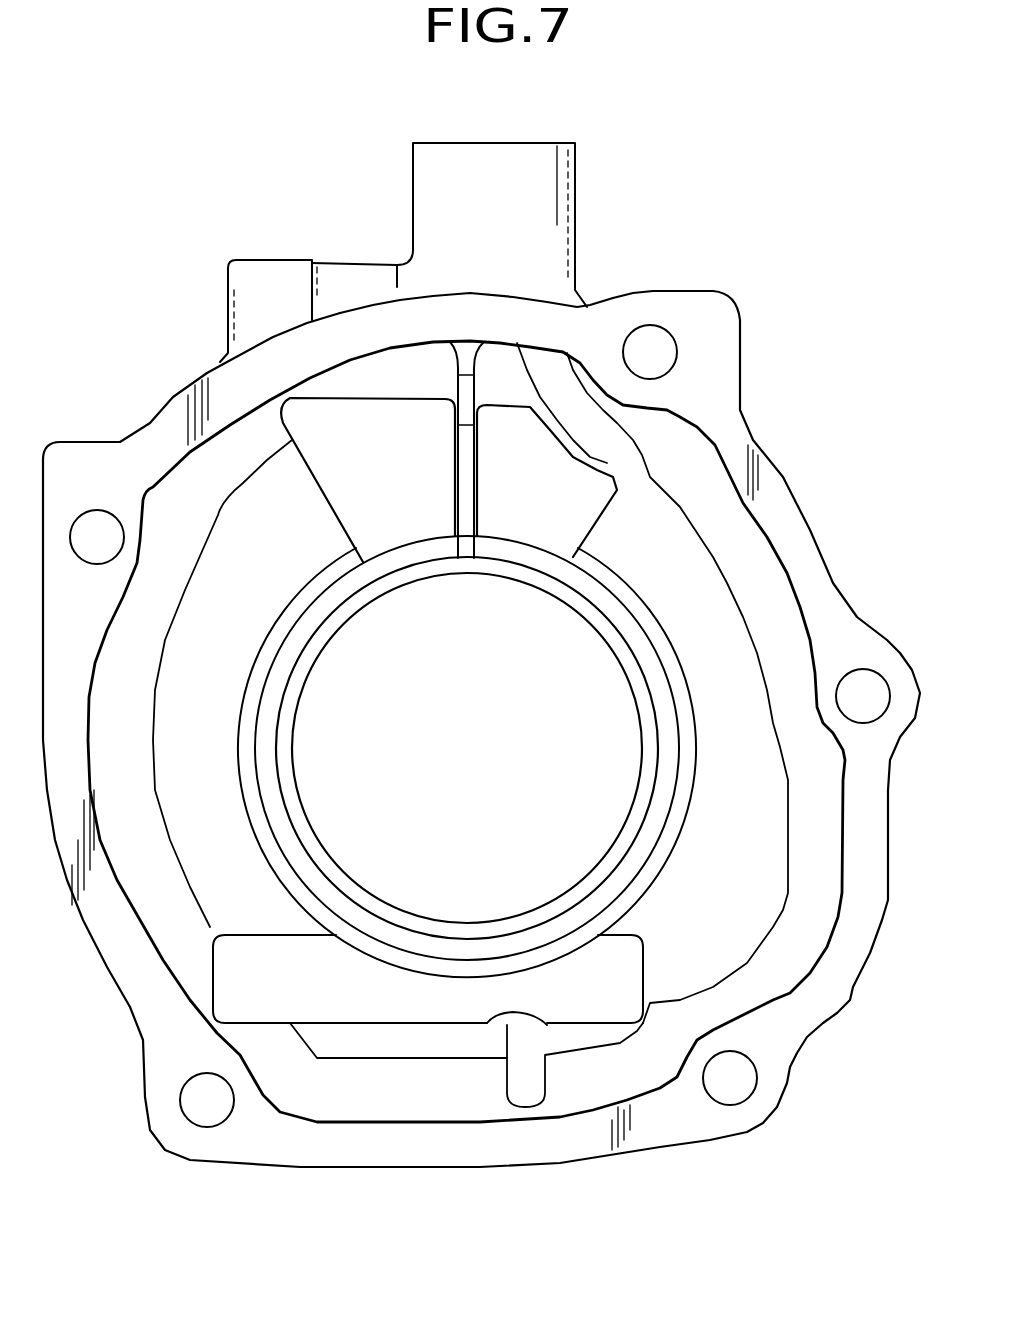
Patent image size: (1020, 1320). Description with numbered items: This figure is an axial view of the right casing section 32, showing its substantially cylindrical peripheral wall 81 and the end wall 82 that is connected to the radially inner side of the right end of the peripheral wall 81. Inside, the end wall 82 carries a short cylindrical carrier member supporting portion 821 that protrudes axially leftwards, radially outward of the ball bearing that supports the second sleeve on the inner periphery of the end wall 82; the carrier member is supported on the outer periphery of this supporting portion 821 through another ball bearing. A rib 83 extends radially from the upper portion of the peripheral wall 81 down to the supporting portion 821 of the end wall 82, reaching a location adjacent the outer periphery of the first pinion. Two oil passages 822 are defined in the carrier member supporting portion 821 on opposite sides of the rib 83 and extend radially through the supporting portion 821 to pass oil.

The peripheral wall 81 is at (153, 433).
The right casing section 32 is at (800, 467).
The end wall 82 is at (710, 700).
The carrier member supporting portion 821 is at (287, 833).
The oil passages 822 is at (323, 490).
The rib 83 is at (477, 437).